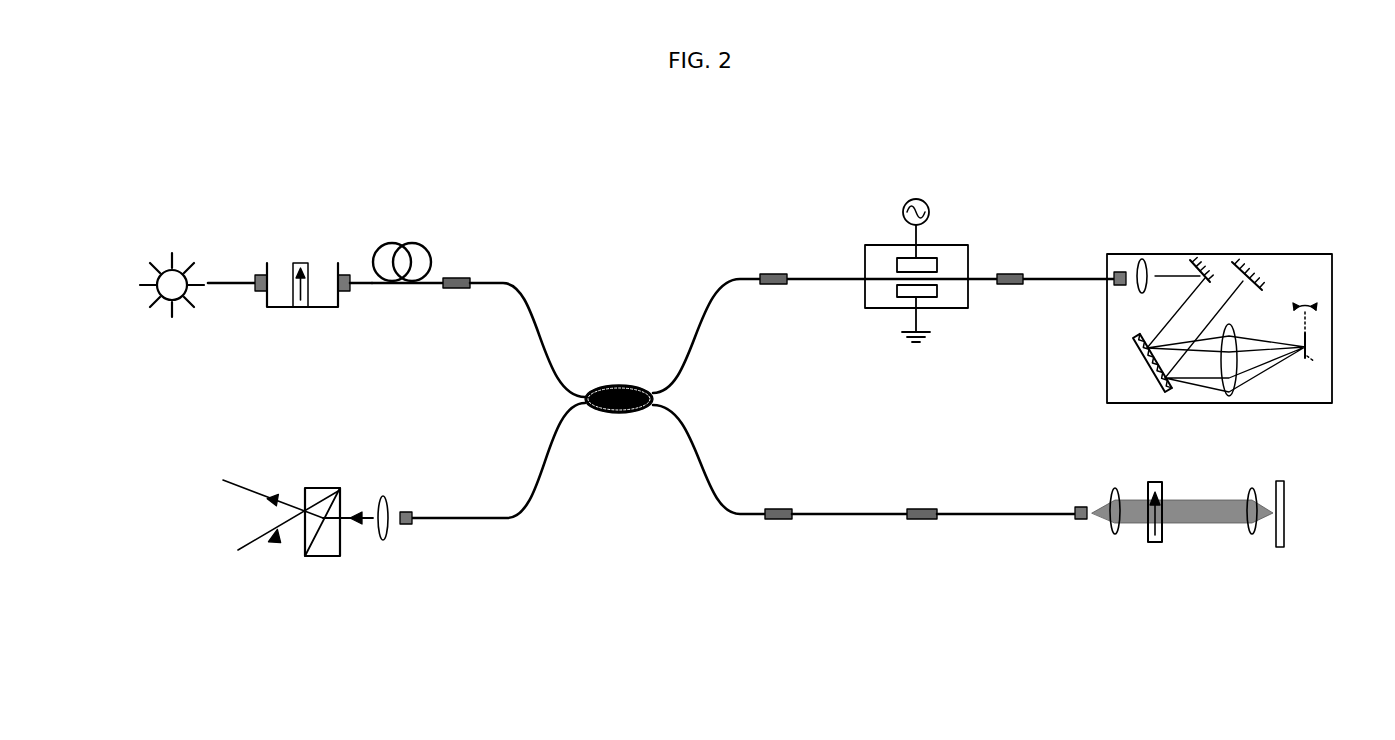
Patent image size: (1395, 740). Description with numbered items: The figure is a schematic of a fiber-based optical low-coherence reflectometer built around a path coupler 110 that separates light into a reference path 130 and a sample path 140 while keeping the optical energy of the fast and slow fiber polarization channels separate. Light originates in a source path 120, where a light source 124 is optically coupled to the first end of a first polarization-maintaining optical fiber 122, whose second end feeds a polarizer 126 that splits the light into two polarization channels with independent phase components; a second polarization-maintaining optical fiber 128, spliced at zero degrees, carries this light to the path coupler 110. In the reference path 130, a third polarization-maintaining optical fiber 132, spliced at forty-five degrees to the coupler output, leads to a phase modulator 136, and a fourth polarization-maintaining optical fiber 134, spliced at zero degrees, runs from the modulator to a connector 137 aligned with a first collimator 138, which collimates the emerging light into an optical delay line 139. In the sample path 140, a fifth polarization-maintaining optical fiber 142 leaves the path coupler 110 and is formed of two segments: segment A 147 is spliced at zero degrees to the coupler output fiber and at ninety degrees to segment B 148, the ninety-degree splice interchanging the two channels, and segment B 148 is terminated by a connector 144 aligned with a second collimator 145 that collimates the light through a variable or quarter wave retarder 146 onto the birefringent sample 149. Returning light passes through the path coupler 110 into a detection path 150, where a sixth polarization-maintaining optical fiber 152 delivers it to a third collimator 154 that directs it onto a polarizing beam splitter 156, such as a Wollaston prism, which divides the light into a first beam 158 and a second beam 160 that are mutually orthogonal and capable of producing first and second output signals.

The path coupler 110 is at (619, 417).
The source path 120 is at (105, 240).
The first polarization-maintaining optical fiber 122 is at (233, 283).
The light source 124 is at (183, 258).
The polarizer 126 is at (340, 251).
The second polarization-maintaining optical fiber 128 is at (575, 294).
The reference path 130 is at (1336, 228).
The third polarization-maintaining optical fiber 132 is at (830, 312).
The fourth polarization-maintaining optical fiber 134 is at (1083, 306).
The phase modulator 136 is at (957, 330).
The connector 137 is at (1118, 290).
The first collimator 138 is at (1140, 262).
The optical delay line 139 is at (1263, 388).
The sample path 140 is at (1340, 462).
The fifth polarization-maintaining optical fiber 142 is at (864, 524).
The connector 144 is at (1083, 523).
The second collimator 145 is at (1118, 535).
The variable or quarter wave retarder 146 is at (1170, 548).
The segment A 147 is at (900, 505).
The segment B 148 is at (1006, 495).
The sample 149 is at (1281, 555).
The detection path 150 is at (117, 462).
The sixth polarization-maintaining optical fiber 152 is at (538, 500).
The third collimator 154 is at (386, 540).
The polarizing beam splitter 156 is at (345, 488).
The first beam 158 is at (255, 484).
The second beam 160 is at (258, 540).